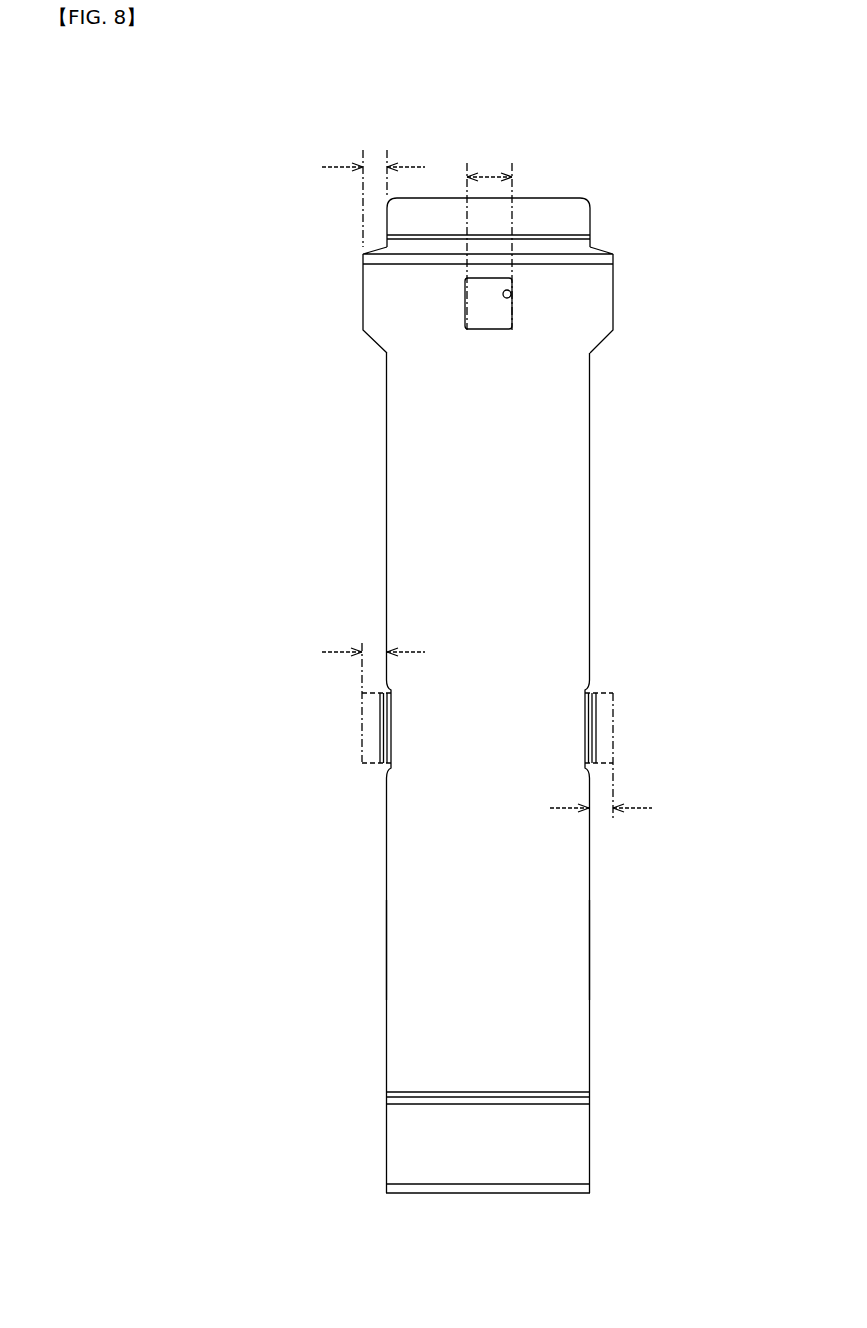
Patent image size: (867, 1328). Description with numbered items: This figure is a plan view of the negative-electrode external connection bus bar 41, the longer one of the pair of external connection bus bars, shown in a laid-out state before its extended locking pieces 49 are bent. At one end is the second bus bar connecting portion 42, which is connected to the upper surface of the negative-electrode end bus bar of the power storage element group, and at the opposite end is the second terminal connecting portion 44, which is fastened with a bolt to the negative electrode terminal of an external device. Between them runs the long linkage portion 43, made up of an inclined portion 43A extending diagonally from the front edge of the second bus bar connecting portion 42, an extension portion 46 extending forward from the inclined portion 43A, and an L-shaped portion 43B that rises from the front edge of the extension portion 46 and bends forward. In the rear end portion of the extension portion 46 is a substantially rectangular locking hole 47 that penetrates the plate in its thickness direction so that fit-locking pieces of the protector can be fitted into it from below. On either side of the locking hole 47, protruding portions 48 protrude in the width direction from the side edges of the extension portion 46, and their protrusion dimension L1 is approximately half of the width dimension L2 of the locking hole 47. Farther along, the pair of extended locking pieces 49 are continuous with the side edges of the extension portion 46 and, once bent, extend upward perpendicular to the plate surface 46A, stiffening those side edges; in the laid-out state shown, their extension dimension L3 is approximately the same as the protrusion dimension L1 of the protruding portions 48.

The second bus bar connecting portion 42 is at (580, 218).
The inclined portion 43A is at (547, 245).
The protruding portions 48 is at (380, 292).
The locking hole 47 is at (511, 296).
The long linkage portion 43 is at (622, 490).
The extension portion 46 is at (565, 549).
The extended locking pieces 49 is at (390, 720).
The plate surface 46A is at (430, 921).
The negative-electrode external connection bus bar 41 is at (632, 928).
The L-shaped portion 43B is at (563, 1141).
The second terminal connecting portion 44 is at (504, 1195).
The protrusion dimension L1 is at (373, 162).
The width dimension L2 is at (487, 172).
The extension dimension L3 is at (375, 648).